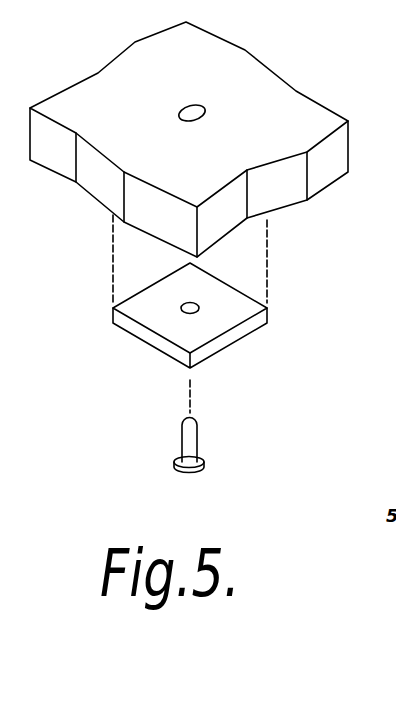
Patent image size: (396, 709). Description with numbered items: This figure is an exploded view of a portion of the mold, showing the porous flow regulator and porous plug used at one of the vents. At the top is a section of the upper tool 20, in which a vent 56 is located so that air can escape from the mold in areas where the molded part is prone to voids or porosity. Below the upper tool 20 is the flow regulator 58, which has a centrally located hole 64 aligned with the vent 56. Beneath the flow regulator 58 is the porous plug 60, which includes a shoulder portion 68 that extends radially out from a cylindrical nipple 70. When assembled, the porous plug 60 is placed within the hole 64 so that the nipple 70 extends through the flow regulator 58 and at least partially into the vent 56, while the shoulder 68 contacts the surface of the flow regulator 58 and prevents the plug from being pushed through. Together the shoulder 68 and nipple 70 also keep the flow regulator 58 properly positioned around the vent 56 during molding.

The upper tool 20 is at (304, 117).
The vent 56 is at (188, 115).
The flow regulator 58 is at (143, 308).
The hole 64 is at (182, 310).
The porous plug 60 is at (196, 469).
The shoulder portion 68 is at (174, 462).
The cylindrical nipple 70 is at (192, 435).